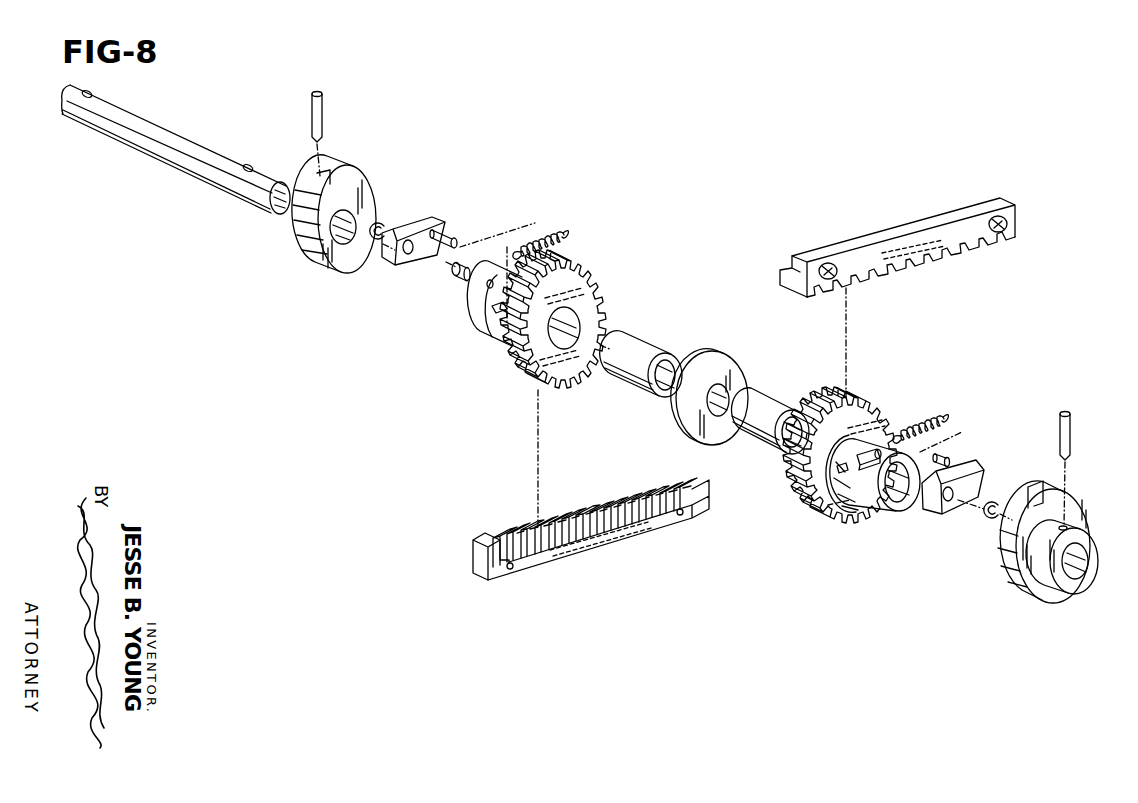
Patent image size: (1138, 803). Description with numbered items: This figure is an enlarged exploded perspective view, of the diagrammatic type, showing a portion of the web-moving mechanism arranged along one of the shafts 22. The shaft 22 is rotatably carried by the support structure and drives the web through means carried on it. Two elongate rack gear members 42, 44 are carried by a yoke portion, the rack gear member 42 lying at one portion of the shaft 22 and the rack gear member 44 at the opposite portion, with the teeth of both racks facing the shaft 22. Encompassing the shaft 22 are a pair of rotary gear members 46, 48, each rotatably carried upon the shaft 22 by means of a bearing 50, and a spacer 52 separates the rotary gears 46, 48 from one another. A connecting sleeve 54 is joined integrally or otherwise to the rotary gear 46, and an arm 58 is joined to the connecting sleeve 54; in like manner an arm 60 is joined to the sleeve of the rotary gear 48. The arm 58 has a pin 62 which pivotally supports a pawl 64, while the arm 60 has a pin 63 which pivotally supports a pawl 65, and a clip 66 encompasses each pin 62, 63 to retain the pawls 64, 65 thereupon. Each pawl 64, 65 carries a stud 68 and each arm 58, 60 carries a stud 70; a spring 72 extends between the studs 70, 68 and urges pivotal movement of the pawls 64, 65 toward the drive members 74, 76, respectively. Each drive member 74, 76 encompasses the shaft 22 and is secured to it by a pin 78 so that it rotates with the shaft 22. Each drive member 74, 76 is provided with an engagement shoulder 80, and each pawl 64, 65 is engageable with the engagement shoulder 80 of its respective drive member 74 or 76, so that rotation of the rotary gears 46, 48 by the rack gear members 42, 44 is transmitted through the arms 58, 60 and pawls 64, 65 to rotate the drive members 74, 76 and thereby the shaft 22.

The shaft 22 is at (138, 143).
The rack gear member 42 is at (915, 268).
The rack gear member 44 is at (645, 525).
The rotary gear member 46 is at (860, 404).
The rotary gear member 48 is at (590, 273).
The bearing 50 is at (643, 343).
The spacer 52 is at (727, 360).
The connecting sleeve 54 is at (898, 511).
The arm 58 is at (823, 510).
The arm 60 is at (490, 298).
The pin 62 is at (872, 460).
The pin 63 is at (458, 277).
The pawl 64 is at (980, 466).
The pawl 65 is at (388, 262).
The clip 66 is at (382, 223).
The stud 68 is at (452, 237).
The stud 70 is at (503, 315).
The spring 72 is at (560, 232).
The drive member 74 is at (1082, 513).
The drive member 76 is at (353, 173).
The pin 78 is at (312, 108).
The engagement shoulder 80 is at (318, 177).